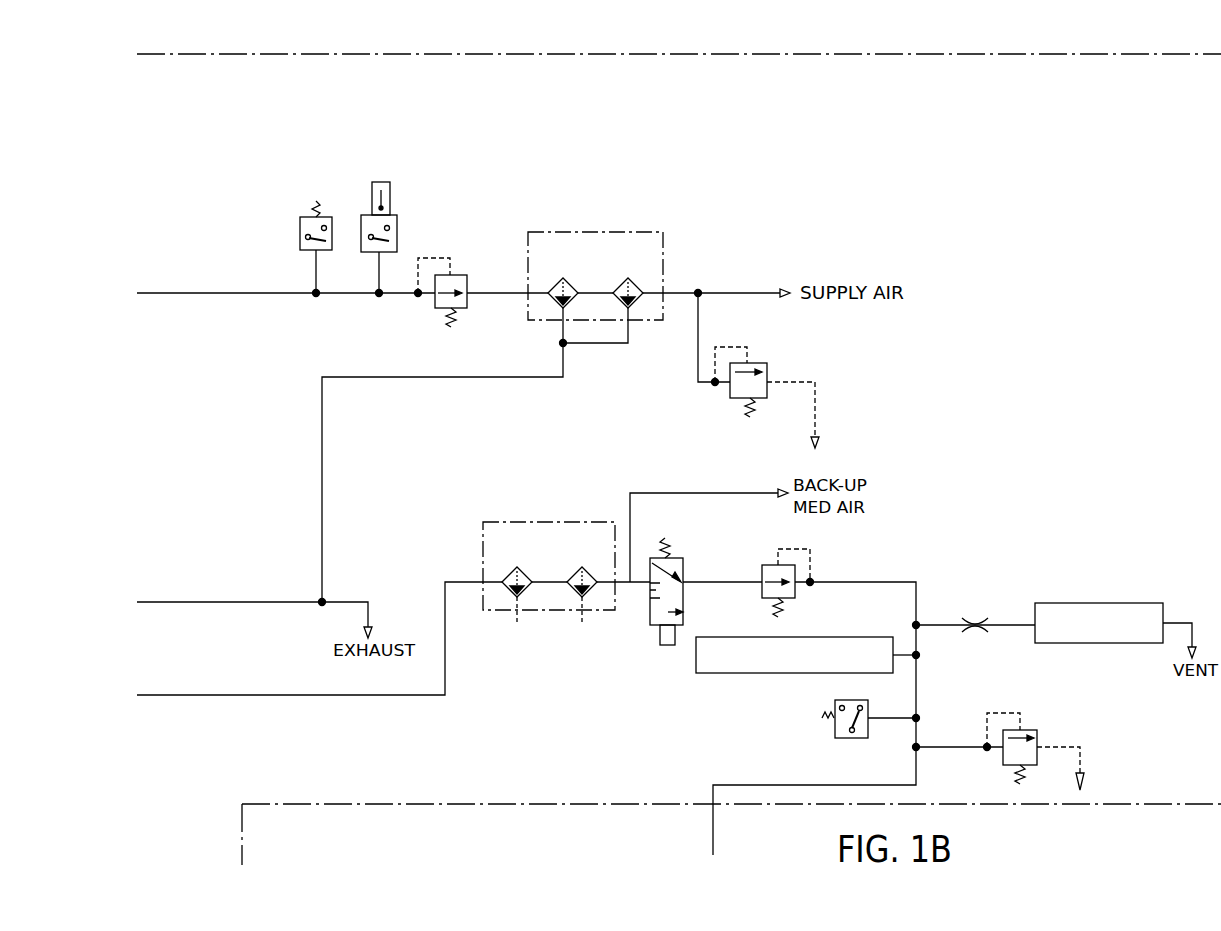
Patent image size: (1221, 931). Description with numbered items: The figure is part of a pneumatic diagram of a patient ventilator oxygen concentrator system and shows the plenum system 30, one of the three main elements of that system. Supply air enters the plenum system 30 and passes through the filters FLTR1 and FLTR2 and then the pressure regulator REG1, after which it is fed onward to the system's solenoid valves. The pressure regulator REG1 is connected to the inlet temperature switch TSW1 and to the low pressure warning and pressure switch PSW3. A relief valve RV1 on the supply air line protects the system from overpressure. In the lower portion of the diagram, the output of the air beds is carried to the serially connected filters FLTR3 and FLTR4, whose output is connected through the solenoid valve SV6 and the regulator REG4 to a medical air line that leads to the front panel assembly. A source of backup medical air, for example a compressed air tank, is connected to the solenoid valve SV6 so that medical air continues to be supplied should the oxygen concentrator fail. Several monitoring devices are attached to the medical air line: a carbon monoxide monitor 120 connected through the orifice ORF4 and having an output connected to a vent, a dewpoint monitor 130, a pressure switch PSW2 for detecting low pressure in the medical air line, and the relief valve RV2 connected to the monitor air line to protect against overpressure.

The plenum system 30 is at (1127, 123).
The low pressure warning and pressure switch PSW3 is at (316, 239).
The inlet temperature switch TSW1 is at (380, 227).
The pressure regulator REG1 is at (441, 281).
The filter FLTR2 is at (558, 300).
The filter FLTR1 is at (610, 300).
The relief valve RV1 is at (767, 397).
The filter FLTR3 is at (513, 585).
The filter FLTR4 is at (583, 585).
The solenoid valve SV6 is at (667, 601).
The regulator REG4 is at (788, 572).
The orifice ORF4 is at (974, 614).
The carbon monoxide monitor 120 is at (1115, 603).
The dewpoint monitor 130 is at (755, 673).
The pressure switch PSW2 is at (843, 719).
The relief valve RV2 is at (999, 740).